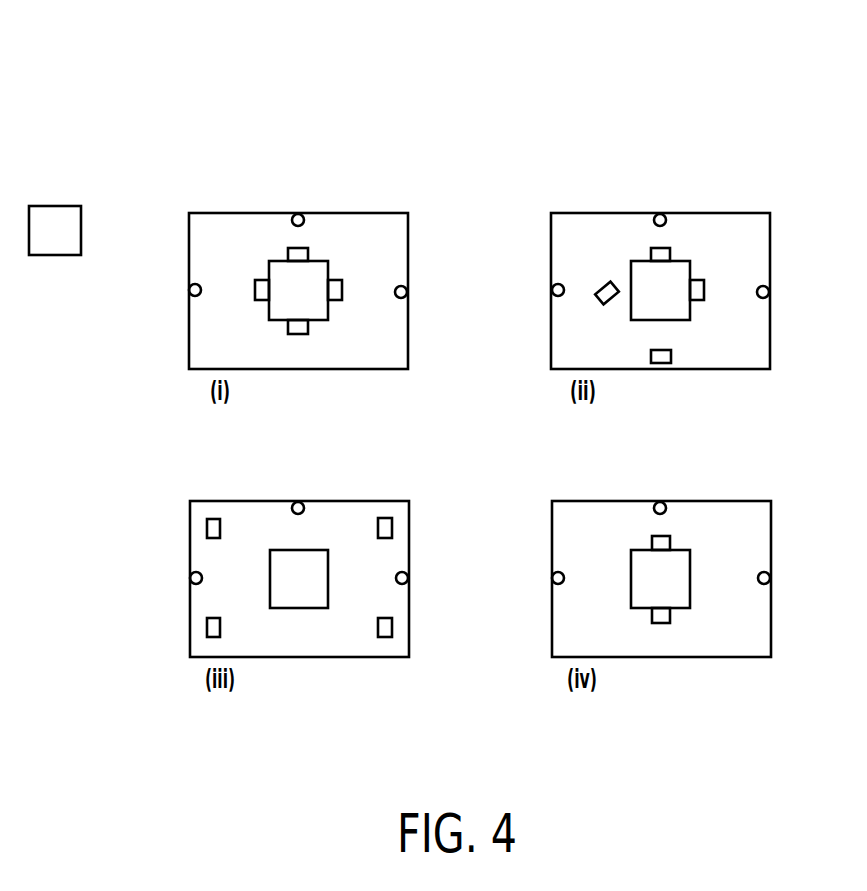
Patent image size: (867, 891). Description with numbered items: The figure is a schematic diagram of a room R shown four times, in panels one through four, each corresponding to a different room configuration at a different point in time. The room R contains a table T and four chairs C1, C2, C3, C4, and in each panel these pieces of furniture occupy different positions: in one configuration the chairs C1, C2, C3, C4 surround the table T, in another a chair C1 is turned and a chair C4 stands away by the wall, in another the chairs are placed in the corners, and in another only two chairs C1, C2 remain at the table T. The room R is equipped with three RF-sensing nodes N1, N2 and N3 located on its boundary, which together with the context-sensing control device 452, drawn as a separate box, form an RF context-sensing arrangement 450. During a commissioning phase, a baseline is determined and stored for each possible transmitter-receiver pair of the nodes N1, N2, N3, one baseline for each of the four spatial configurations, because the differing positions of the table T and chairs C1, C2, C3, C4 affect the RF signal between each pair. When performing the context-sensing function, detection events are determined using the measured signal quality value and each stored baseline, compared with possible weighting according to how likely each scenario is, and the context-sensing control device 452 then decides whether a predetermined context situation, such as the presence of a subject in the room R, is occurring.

The RF context-sensing arrangement 450 is at (111, 101).
The context-sensing control device 452 is at (52, 206).
The RF-sensing node N1 is at (189, 290).
The RF-sensing node N2 is at (298, 213).
The RF-sensing node N3 is at (407, 292).
The chair C1 is at (255, 291).
The chair C2 is at (304, 248).
The chair C3 is at (342, 288).
The chair C4 is at (298, 334).
The table T is at (330, 270).
The room R is at (189, 352).